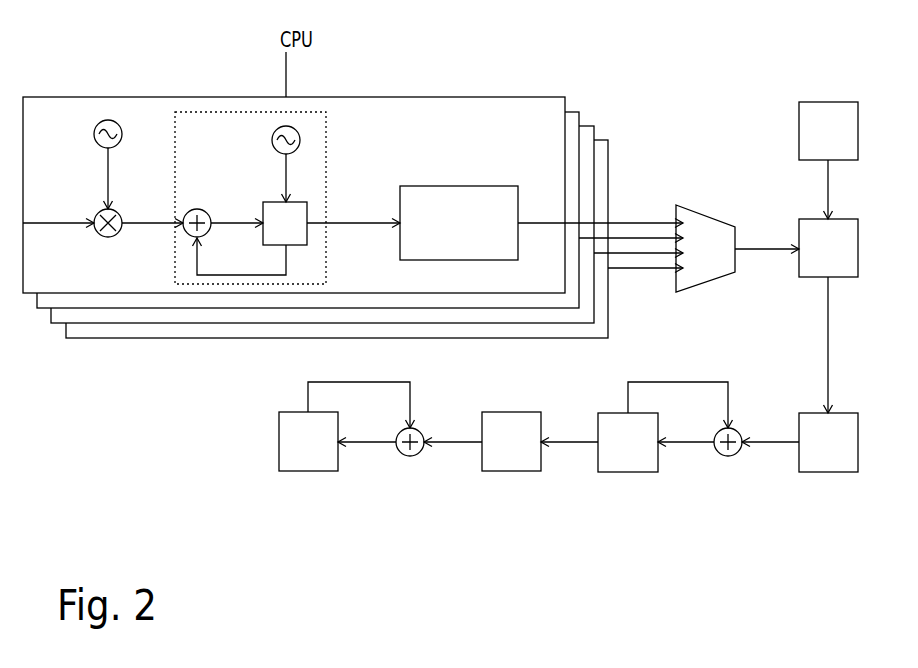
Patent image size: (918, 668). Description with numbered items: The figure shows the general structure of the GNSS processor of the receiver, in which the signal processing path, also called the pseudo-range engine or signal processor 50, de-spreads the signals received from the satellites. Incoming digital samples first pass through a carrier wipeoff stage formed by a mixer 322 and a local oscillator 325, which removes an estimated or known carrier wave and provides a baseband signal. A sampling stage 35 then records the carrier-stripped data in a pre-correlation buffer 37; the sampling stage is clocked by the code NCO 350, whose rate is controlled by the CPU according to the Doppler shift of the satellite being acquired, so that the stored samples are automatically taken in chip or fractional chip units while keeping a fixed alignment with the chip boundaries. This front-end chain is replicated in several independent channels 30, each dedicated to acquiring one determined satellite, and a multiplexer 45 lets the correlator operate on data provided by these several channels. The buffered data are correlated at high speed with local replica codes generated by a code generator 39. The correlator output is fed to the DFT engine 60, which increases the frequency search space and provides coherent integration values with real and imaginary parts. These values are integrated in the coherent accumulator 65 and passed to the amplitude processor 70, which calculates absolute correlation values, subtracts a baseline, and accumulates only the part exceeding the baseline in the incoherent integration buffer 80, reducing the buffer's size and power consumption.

The channel 30 is at (552, 100).
The local oscillator 325 is at (95, 128).
The mixer 322 is at (107, 238).
The sampling stage 35 is at (313, 153).
The code NCO 350 is at (274, 145).
The pre-correlation buffer 37 is at (432, 199).
The multiplexer 45 is at (701, 275).
The code generator 39 is at (818, 105).
The signal processor 50 is at (805, 232).
The DFT engine 60 is at (810, 420).
The coherent accumulator 65 is at (597, 420).
The amplitude processor 70 is at (493, 465).
The incoherent integration buffer 80 is at (297, 453).